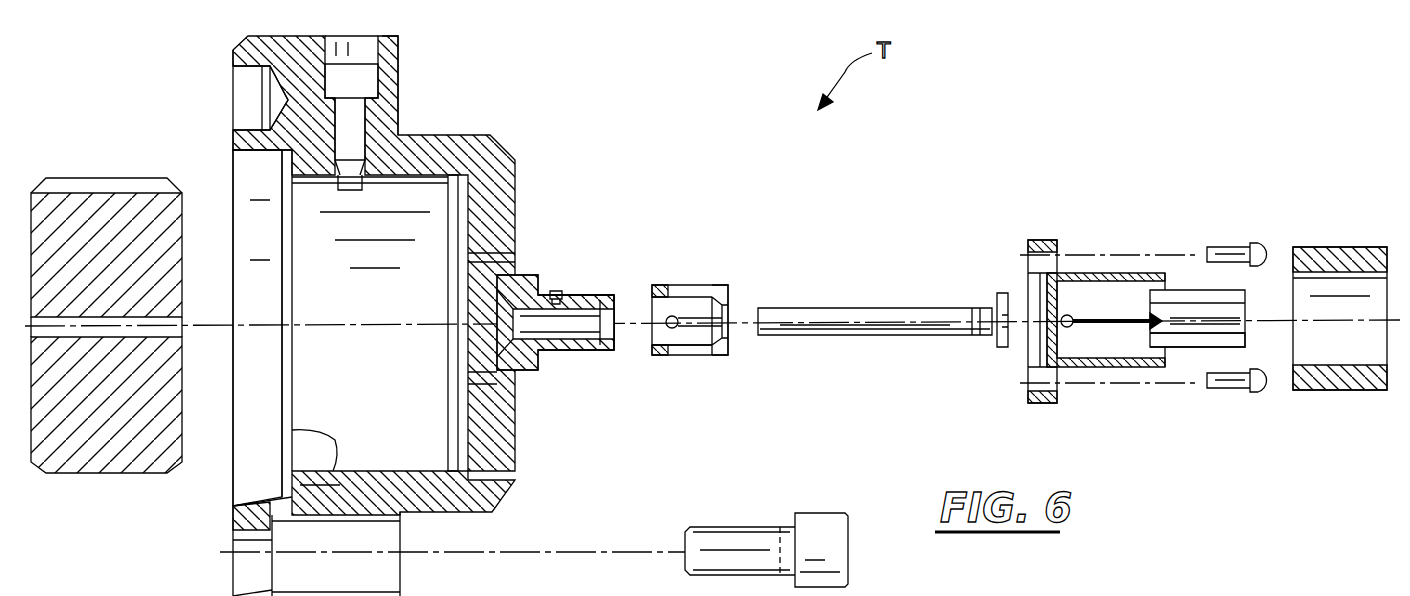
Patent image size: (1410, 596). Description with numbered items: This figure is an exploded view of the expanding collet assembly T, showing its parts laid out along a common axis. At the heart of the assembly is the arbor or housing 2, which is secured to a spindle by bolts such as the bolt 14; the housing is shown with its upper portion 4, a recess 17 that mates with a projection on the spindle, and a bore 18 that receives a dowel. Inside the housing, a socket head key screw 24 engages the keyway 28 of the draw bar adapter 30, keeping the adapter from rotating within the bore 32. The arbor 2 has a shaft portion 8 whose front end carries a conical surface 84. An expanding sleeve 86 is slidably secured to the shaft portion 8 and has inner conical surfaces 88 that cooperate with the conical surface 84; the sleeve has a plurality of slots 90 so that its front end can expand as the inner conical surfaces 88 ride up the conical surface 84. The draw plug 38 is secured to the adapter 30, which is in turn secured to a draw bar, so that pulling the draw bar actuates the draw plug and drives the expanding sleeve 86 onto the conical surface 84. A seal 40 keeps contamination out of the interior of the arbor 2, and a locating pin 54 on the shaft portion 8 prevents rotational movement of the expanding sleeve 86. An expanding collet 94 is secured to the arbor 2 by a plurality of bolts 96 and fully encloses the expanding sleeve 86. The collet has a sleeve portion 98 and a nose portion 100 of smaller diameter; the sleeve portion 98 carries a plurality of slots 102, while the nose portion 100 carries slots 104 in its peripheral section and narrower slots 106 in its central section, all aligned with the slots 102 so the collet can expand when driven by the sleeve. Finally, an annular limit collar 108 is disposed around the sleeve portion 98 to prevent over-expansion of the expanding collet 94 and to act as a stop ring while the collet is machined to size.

The arbor or housing 2 is at (455, 140).
The housing upper portion 4 is at (400, 42).
The shaft portion 8 is at (577, 352).
The bolt 14 is at (728, 527).
The recess 17 is at (245, 456).
The bore 18 is at (245, 92).
The socket head key screw 24 is at (365, 76).
The keyway 28 is at (125, 185).
The draw bar adapter 30 is at (78, 205).
The bore 32 is at (292, 432).
The draw plug 38 is at (890, 337).
The seal 40 is at (975, 308).
The locating pin 54 is at (555, 290).
The conical surface 84 is at (597, 294).
The expanding sleeve 86 is at (676, 285).
The inner conical surfaces 88 is at (720, 285).
The slots 90 is at (700, 356).
The expanding collet 94 is at (1093, 268).
The bolts 96 is at (1226, 247).
The sleeve portion 98 is at (1092, 370).
The nose portion 100 is at (1200, 330).
The slots 102 is at (1060, 325).
The slots 104 is at (1175, 290).
The slots 106 is at (1200, 350).
The annular limit collar 108 is at (1345, 247).